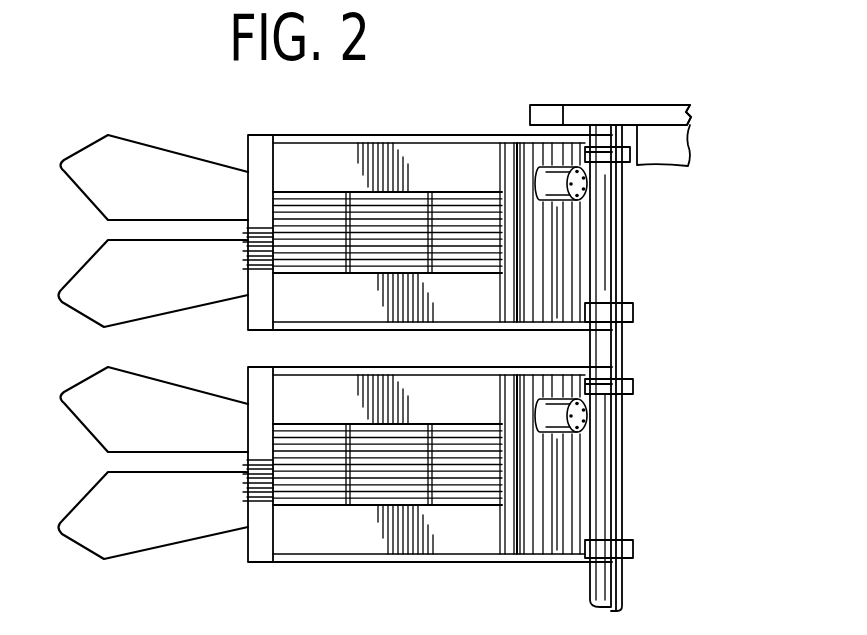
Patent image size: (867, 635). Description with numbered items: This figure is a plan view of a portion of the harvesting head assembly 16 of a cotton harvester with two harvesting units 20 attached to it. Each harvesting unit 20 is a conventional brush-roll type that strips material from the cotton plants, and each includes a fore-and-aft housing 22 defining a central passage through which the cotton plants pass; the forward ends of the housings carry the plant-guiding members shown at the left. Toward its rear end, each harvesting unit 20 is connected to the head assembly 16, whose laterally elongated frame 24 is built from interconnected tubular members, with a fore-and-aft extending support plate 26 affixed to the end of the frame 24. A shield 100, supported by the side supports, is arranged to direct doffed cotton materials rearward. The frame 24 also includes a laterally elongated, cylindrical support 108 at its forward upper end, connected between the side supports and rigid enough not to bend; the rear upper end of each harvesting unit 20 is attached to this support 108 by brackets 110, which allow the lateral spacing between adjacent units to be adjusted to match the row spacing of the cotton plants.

The harvesting head assembly 16 is at (612, 82).
The harvesting unit 20 is at (256, 126).
The housing 22 is at (450, 158).
The frame 24 is at (632, 100).
The support plate 26 is at (690, 115).
The shield 100 is at (670, 156).
The support 108 is at (612, 240).
The bracket 110 is at (626, 153).